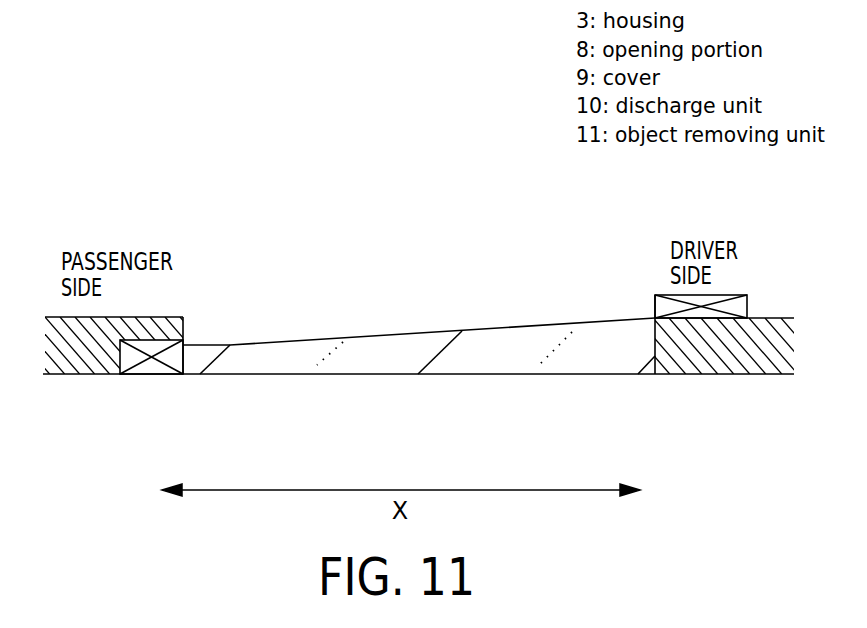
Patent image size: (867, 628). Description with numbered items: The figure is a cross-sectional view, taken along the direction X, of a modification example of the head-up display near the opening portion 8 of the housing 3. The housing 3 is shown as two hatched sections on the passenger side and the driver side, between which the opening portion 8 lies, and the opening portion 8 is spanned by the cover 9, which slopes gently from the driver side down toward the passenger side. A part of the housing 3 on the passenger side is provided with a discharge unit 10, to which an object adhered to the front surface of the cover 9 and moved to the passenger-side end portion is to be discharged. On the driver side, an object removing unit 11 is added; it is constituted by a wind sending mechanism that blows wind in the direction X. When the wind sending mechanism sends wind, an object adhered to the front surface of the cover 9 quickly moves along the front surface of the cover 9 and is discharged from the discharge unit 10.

The housing 3 is at (773, 323).
The opening portion 8 is at (190, 330).
The cover 9 is at (437, 333).
The discharge unit 10 is at (145, 374).
The object removing unit 11 is at (655, 308).